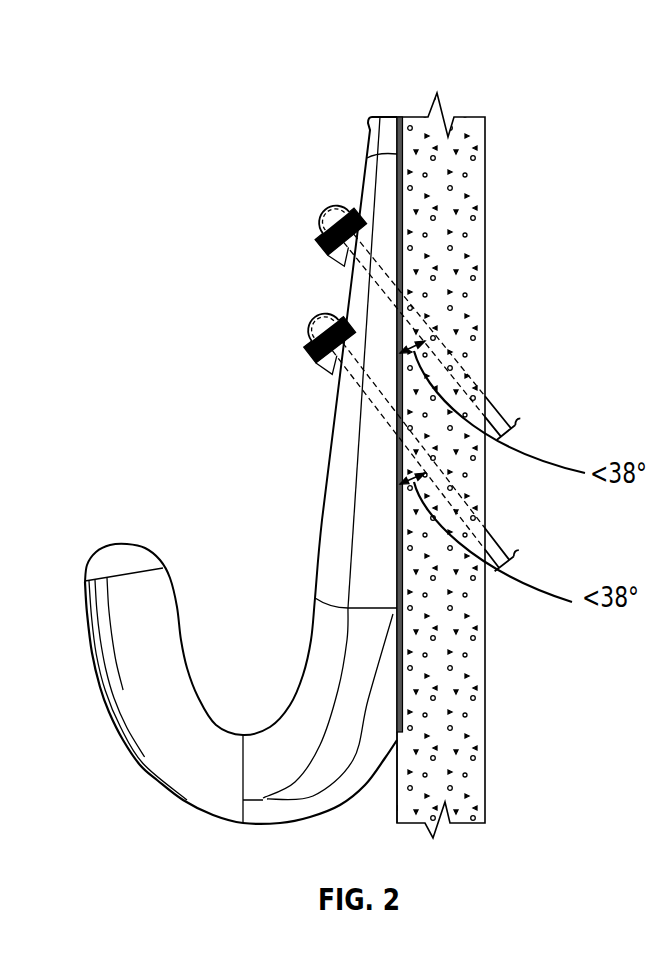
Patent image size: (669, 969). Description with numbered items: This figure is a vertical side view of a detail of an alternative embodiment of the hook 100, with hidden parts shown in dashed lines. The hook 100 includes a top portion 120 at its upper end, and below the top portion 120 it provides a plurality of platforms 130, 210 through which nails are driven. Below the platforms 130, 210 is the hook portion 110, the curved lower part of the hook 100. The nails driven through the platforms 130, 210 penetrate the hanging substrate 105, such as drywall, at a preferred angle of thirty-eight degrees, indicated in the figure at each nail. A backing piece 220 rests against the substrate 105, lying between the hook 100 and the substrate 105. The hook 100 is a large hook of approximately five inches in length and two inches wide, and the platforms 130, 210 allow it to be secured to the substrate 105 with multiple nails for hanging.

The hook 100 is at (238, 822).
The hanging substrate 105 is at (468, 202).
The hook portion 110 is at (182, 596).
The top portion 120 is at (377, 116).
The platform 130 is at (350, 265).
The platform 210 is at (333, 378).
The backing piece 220 is at (403, 120).